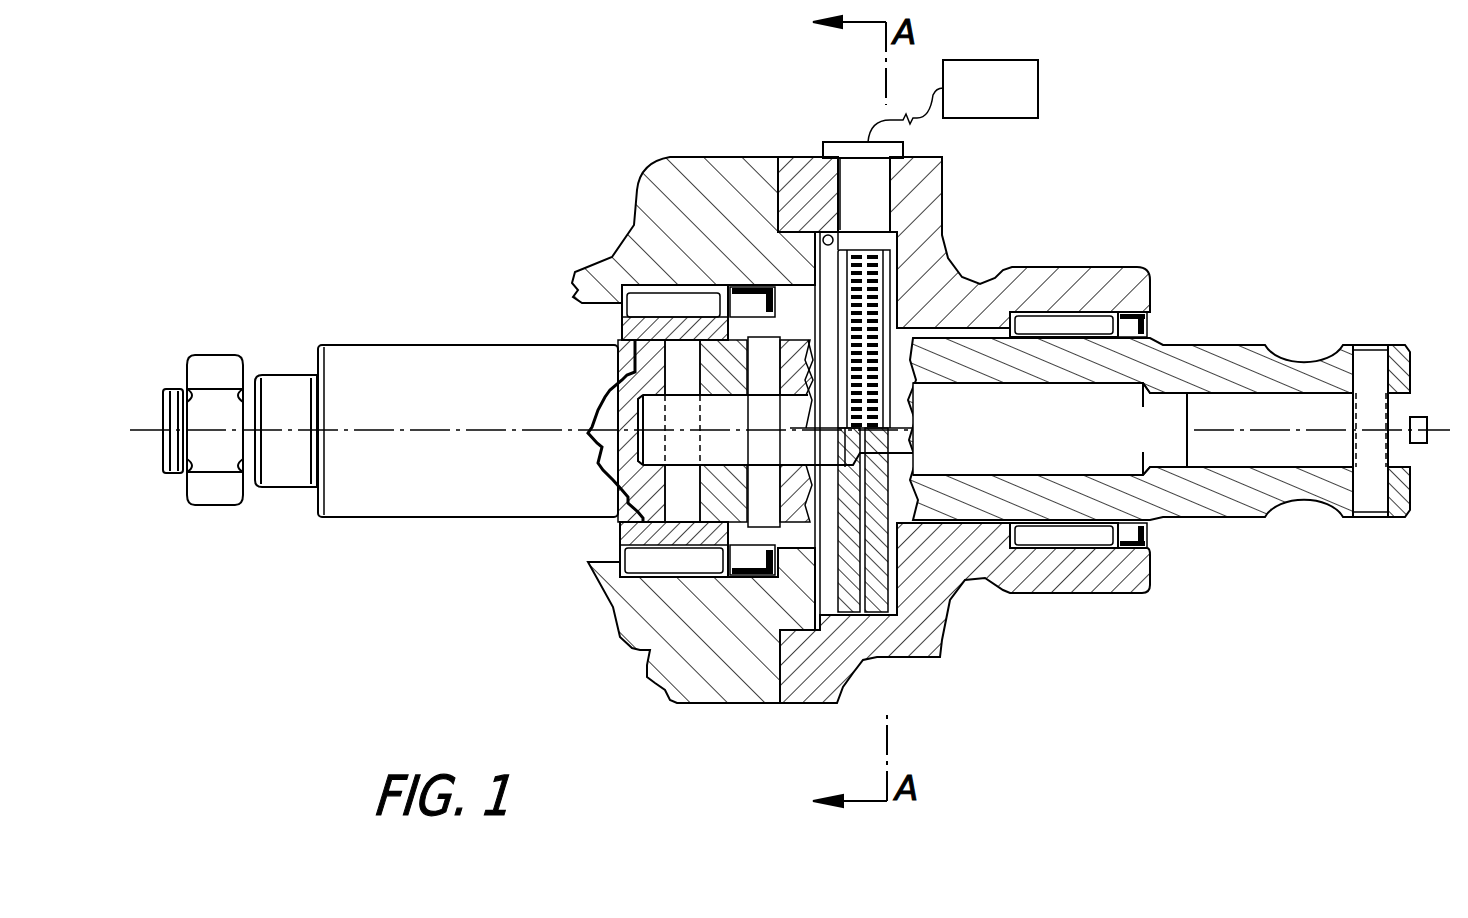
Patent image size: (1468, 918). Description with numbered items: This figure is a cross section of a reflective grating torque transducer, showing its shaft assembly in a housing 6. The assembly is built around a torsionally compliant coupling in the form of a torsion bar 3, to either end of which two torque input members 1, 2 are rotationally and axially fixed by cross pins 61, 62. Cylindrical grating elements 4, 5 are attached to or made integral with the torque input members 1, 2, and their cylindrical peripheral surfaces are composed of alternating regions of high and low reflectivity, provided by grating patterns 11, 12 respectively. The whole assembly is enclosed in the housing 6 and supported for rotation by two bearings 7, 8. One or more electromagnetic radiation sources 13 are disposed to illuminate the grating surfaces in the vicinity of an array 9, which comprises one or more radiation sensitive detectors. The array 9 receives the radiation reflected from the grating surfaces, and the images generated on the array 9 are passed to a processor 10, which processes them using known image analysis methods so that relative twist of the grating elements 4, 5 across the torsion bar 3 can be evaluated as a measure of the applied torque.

The torque input member 1 is at (1250, 507).
The torque input member 2 is at (383, 498).
The torsion bar 3 is at (955, 440).
The grating element 4 is at (905, 268).
The grating element 5 is at (833, 287).
The housing 6 is at (900, 655).
The bearing 7 is at (1088, 535).
The bearing 8 is at (660, 555).
The array 9 is at (873, 198).
The processor 10 is at (1030, 85).
The grating pattern 11 is at (880, 275).
The grating pattern 12 is at (850, 290).
The electromagnetic radiation source 13 is at (826, 235).
The cross pin 61 is at (680, 483).
The cross pin 62 is at (1373, 497).